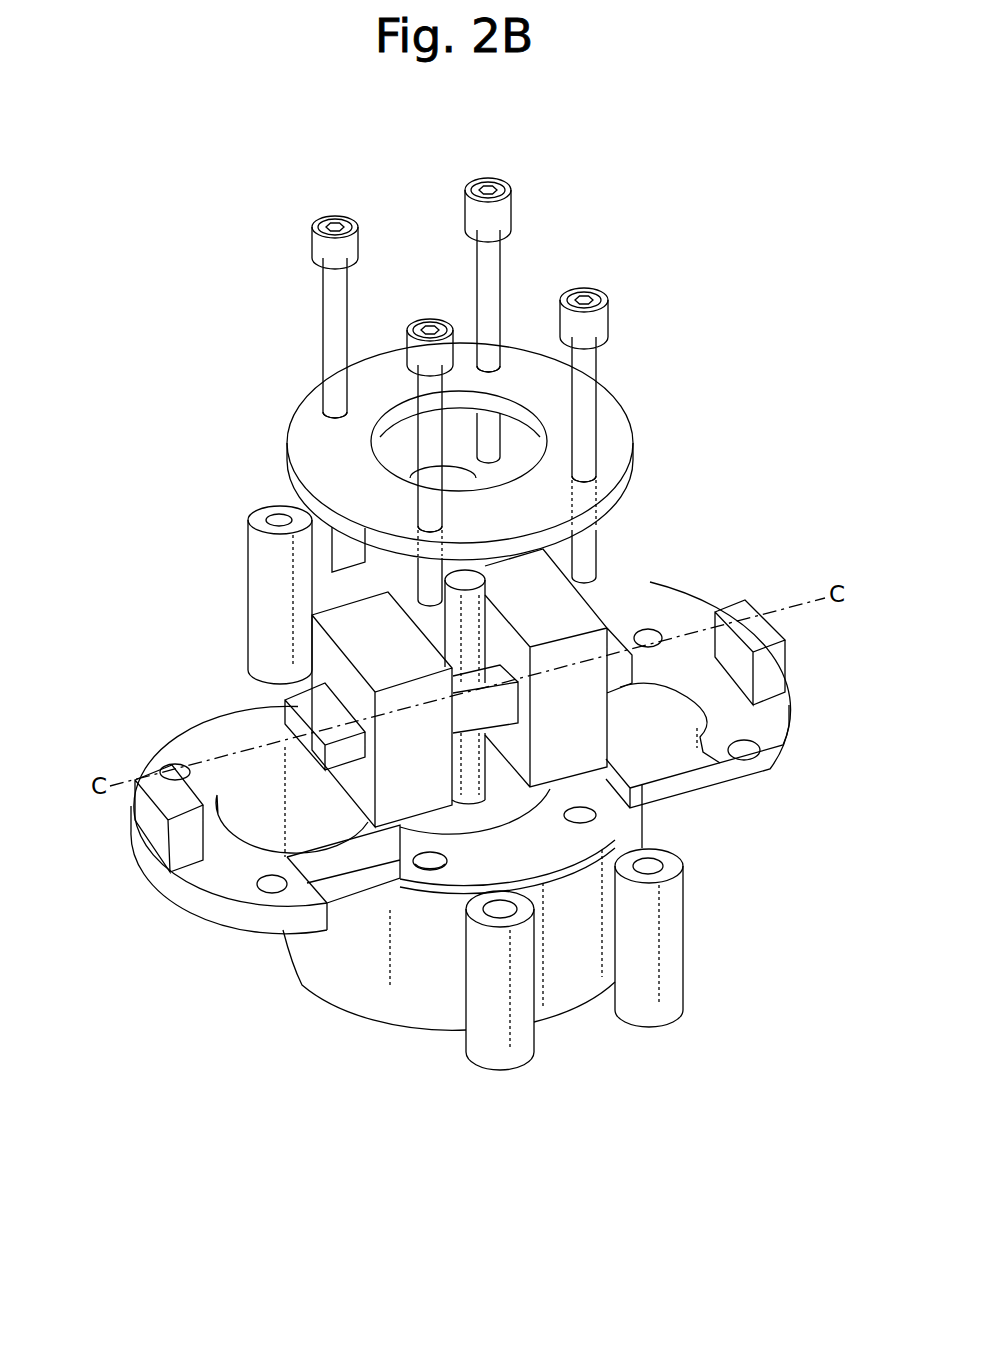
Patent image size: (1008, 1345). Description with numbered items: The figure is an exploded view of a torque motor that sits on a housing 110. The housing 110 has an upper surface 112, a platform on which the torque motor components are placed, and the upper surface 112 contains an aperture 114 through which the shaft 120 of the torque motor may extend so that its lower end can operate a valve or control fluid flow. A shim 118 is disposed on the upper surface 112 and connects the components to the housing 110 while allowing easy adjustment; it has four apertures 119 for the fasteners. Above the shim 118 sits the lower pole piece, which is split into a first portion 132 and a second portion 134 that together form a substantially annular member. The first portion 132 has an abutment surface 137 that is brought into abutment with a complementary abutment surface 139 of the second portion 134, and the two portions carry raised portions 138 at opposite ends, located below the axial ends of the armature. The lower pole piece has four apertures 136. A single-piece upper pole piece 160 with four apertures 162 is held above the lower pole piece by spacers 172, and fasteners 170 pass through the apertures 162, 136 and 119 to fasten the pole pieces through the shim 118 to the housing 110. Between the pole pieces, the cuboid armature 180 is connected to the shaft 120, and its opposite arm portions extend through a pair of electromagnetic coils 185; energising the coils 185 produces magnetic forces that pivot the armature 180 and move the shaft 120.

The housing 110 is at (383, 1000).
The upper surface 112 is at (552, 840).
The aperture 114 is at (485, 793).
The shim 118 is at (570, 847).
The apertures 119 is at (427, 868).
The shaft 120 is at (477, 630).
The first portion 132 is at (210, 872).
The second portion 134 is at (737, 775).
The apertures 136 is at (180, 765).
The abutment surface 137 is at (352, 887).
The raised portions 138 is at (148, 825).
The abutment surface 139 is at (703, 737).
The upper pole piece 160 is at (623, 413).
The apertures 162 is at (335, 412).
The fasteners 170 is at (328, 212).
The spacers 172 is at (263, 555).
The armature 180 is at (315, 710).
The electromagnetic coils 185 is at (330, 625).